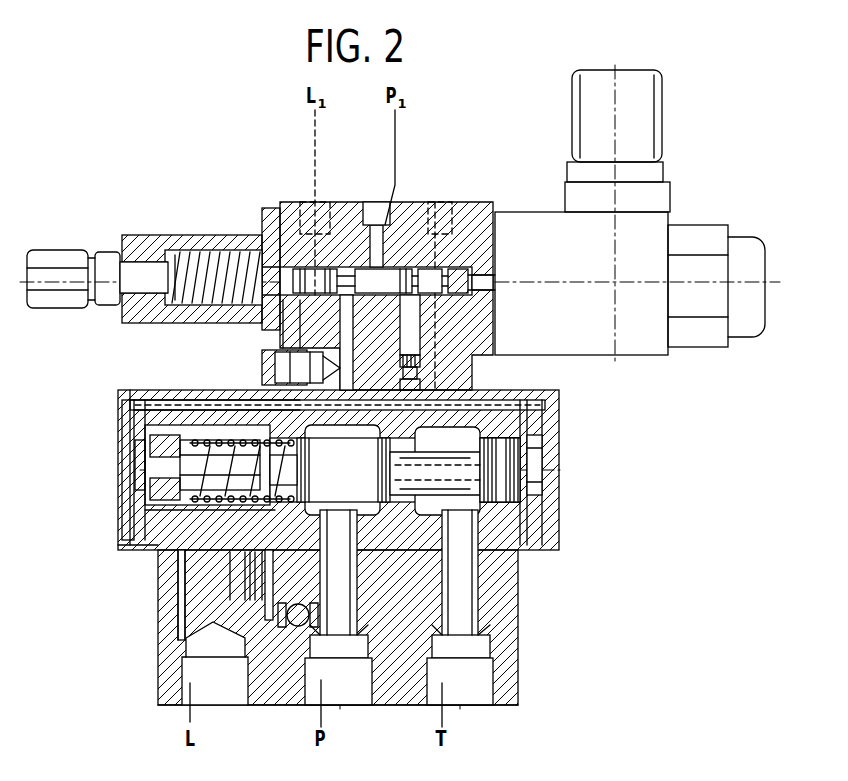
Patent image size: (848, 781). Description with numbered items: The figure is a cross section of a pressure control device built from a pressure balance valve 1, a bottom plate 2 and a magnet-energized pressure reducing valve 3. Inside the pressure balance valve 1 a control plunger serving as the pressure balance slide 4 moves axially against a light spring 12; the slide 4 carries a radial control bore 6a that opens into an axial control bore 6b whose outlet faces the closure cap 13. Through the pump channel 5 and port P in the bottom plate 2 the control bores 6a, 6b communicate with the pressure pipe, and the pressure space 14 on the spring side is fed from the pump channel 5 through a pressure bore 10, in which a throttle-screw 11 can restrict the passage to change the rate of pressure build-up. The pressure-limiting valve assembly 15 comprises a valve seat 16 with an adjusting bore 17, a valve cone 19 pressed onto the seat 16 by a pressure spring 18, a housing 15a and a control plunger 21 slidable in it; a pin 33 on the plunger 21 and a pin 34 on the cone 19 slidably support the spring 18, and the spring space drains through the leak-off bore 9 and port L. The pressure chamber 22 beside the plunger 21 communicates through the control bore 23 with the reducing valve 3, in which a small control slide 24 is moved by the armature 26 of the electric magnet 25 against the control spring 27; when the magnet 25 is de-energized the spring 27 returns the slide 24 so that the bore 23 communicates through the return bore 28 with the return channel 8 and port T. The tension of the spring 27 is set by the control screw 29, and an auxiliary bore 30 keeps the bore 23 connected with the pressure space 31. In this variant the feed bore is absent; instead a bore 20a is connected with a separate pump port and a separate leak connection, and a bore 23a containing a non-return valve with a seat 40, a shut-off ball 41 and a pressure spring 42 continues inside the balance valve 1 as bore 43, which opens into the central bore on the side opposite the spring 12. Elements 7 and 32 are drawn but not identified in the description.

The pressure balance valve 1 is at (515, 548).
The bottom plate 2 is at (507, 695).
The magnet-energized pressure reducing valve 3 is at (297, 205).
The pressure balance slide 4 is at (470, 487).
The pump channel 5 is at (350, 622).
The radial control bore 6a is at (540, 528).
The axial control bore 6b is at (455, 505).
The spool end 7 is at (520, 455).
The return channel 8 is at (470, 625).
The leak-off bore 9 is at (175, 625).
The pressure bore 10 is at (268, 625).
The throttle-screw 11 is at (300, 630).
The light spring 12 is at (230, 561).
The closure cap 13 is at (545, 407).
The pressure space 14 is at (287, 628).
The pressure-limiting valve assembly 15 is at (135, 498).
The housing 15a is at (245, 569).
The valve seat 16 is at (255, 598).
The adjusting bore 17 is at (262, 597).
The pressure spring 18 is at (130, 412).
The valve cone 19 is at (250, 580).
The bore 20a is at (373, 225).
The control plunger 21 is at (130, 490).
The pressure chamber 22 is at (140, 470).
The control bore 23 is at (352, 266).
The bore 23a is at (408, 266).
The control slide 24 is at (332, 266).
The electric magnet 25 is at (536, 222).
The armature 26 is at (510, 280).
The control spring 27 is at (190, 245).
The return bore 28 is at (438, 266).
The control screw 29 is at (147, 270).
The auxiliary bore 30 is at (270, 342).
The pressure space 31 is at (283, 208).
The poppet valve 32 is at (262, 362).
The pin 33 is at (135, 484).
The pin 34 is at (225, 440).
The seat 40 is at (412, 368).
The shut-off ball 41 is at (420, 378).
The pressure spring 42 is at (440, 390).
The bore 43 is at (548, 428).